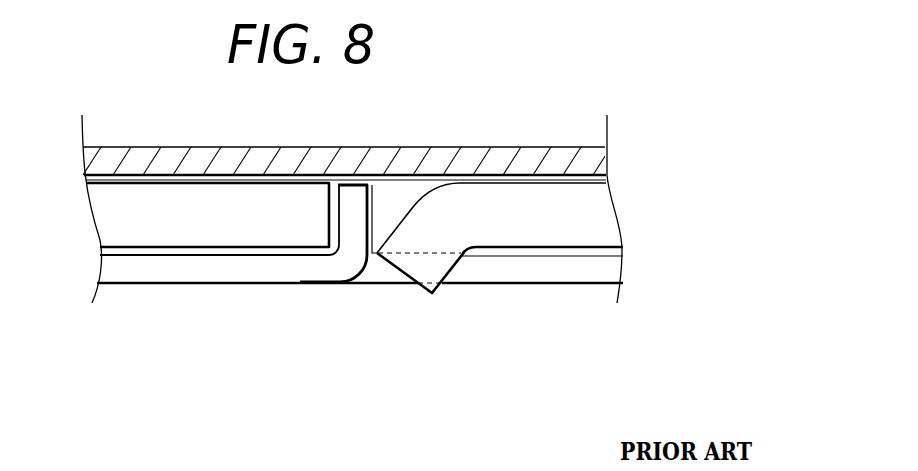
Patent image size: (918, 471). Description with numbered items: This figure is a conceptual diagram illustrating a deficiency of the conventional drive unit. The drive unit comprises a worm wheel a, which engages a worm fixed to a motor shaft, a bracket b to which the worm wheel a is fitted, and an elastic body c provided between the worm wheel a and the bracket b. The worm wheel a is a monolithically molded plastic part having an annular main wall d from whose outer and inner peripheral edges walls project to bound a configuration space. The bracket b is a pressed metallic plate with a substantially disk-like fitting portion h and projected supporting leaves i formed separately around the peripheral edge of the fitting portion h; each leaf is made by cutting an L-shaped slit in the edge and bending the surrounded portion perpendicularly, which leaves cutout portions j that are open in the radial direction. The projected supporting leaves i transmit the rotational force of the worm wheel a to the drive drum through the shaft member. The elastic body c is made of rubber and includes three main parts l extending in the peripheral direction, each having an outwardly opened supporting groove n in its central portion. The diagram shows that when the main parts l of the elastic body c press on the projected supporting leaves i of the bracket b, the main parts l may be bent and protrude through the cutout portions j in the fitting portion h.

The worm wheel a is at (233, 147).
The bracket b is at (530, 273).
The elastic body c is at (230, 232).
The main wall d is at (508, 147).
The fitting portion h is at (180, 277).
The projected supporting leaves i is at (333, 210).
The cutout portions j is at (457, 275).
The main parts l is at (472, 200).
The supporting grooves n is at (353, 187).